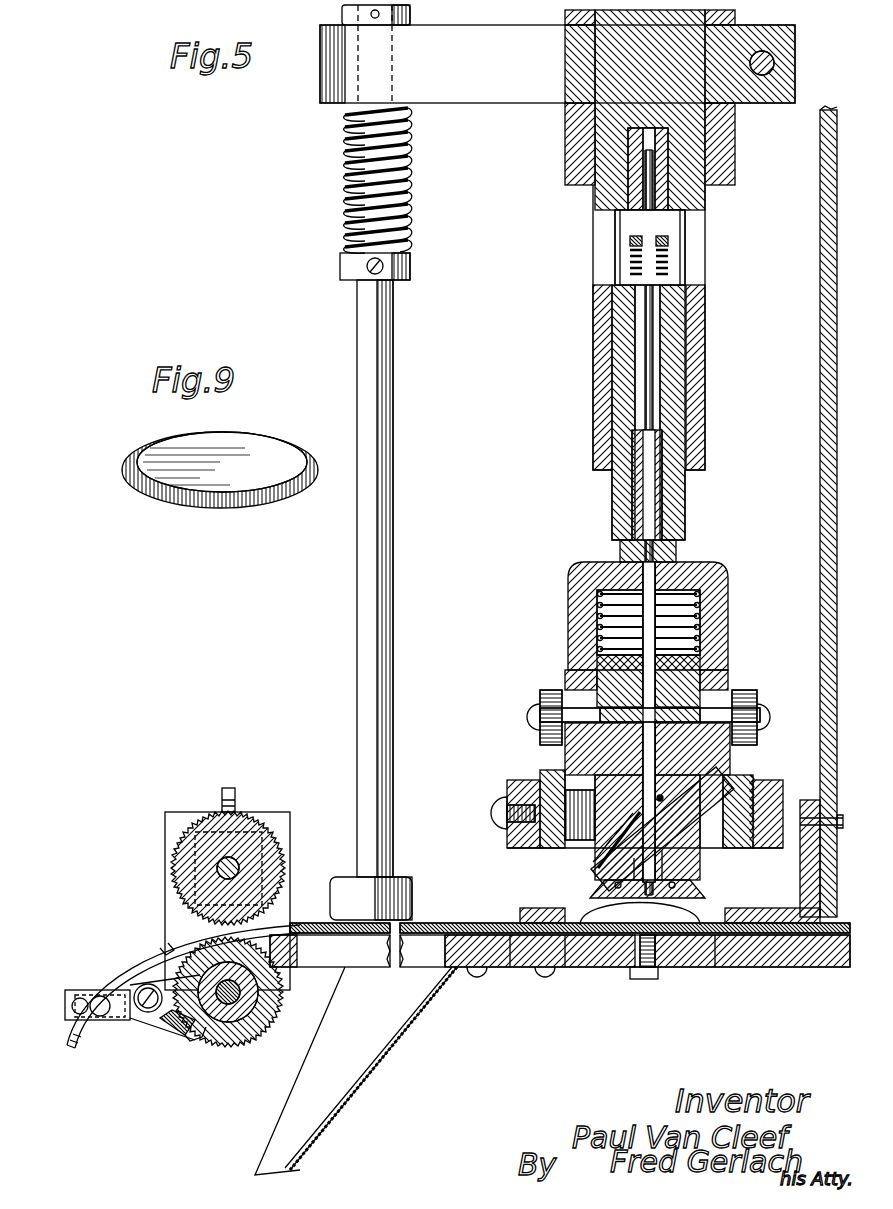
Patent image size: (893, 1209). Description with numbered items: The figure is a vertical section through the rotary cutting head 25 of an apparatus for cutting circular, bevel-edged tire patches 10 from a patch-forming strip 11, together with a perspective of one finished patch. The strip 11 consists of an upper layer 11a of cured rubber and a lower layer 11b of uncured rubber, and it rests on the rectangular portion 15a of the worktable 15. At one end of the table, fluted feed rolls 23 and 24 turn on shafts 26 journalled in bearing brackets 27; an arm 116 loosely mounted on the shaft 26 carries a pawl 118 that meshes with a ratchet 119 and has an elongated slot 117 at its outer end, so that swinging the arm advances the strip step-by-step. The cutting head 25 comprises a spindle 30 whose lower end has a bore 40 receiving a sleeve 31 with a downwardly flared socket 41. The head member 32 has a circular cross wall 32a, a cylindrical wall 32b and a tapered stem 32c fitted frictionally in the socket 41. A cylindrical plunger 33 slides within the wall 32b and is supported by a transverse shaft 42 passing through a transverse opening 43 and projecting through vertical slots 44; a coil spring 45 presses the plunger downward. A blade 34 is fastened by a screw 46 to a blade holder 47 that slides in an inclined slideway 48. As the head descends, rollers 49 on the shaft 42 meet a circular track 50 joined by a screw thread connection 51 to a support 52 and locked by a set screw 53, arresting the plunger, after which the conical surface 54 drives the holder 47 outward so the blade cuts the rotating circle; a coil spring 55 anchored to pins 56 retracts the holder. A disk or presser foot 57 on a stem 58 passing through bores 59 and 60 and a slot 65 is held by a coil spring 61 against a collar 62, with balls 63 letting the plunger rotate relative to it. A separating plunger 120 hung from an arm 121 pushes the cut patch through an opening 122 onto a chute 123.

In FIG. 9, the tire patch 10 is at (283, 452).
In FIG. 5, the patch-forming strip 11 is at (481, 912).
In FIG. 5, the upper layer of cured rubber 11a is at (500, 912).
In FIG. 5, the lower layer of uncured rubber 11b is at (508, 968).
In FIG. 5, the worktable 15 is at (821, 975).
In FIG. 5, the rectangular portion of the worktable 15a is at (770, 967).
In FIG. 5, the upper fluted feed roll 23 is at (258, 815).
In FIG. 5, the lower fluted feed roll 24 is at (250, 1045).
In FIG. 5, the rotary cutting head 25 is at (643, 699).
In FIG. 5, the feed roll shaft 26 is at (215, 868).
In FIG. 5, the bearing bracket 27 is at (168, 835).
In FIG. 5, the spindle 30 is at (706, 377).
In FIG. 5, the sleeve 31 is at (680, 500).
In FIG. 5, the head member 32 is at (724, 622).
In FIG. 5, the circular cross wall 32a is at (590, 568).
In FIG. 5, the cylindrical wall 32b is at (575, 638).
In FIG. 5, the tapered stem 32c is at (637, 505).
In FIG. 5, the cylindrical plunger 33 is at (680, 675).
In FIG. 5, the blade 34 is at (600, 893).
In FIG. 5, the bore 40 is at (692, 236).
In FIG. 5, the downwardly flared socket 41 is at (666, 490).
In FIG. 5, the transverse shaft 42 is at (700, 712).
In FIG. 5, the transverse opening 43 is at (590, 680).
In FIG. 5, the slots 44 is at (570, 695).
In FIG. 5, the coil spring 45 is at (600, 610).
In FIG. 5, the screw 46 is at (592, 878).
In FIG. 5, the blade holder 47 is at (725, 800).
In FIG. 5, the slideway 48 is at (684, 856).
In FIG. 5, the rollers 49 is at (545, 730).
In FIG. 5, the circular track 50 is at (748, 790).
In FIG. 5, the screw thread connection 51 is at (763, 790).
In FIG. 5, the support 52 is at (522, 785).
In FIG. 5, the set screw 53 is at (485, 815).
In FIG. 5, the conical surface 54 is at (705, 770).
In FIG. 5, the coil spring 55 is at (626, 826).
In FIG. 5, the pins 56 is at (661, 797).
In FIG. 5, the disk or presser foot 57 is at (645, 960).
In FIG. 5, the stem 58 is at (650, 353).
In FIG. 5, the vertical bore 59 is at (650, 665).
In FIG. 5, the vertical bore 60 is at (656, 470).
In FIG. 5, the coil spring 61 is at (664, 252).
In FIG. 5, the collar 62 is at (662, 240).
In FIG. 5, the balls 63 is at (725, 880).
In FIG. 5, the longitudinal slot 65 is at (657, 865).
In FIG. 5, the arm 116 is at (120, 1022).
In FIG. 5, the elongated slot 117 is at (85, 1000).
In FIG. 5, the pawl 118 is at (165, 1020).
In FIG. 5, the ratchet 119 is at (210, 1040).
In FIG. 5, the plunger 120 is at (380, 508).
In FIG. 5, the arm 121 is at (482, 93).
In FIG. 5, the opening 122 is at (440, 968).
In FIG. 5, the chute 123 is at (378, 1112).